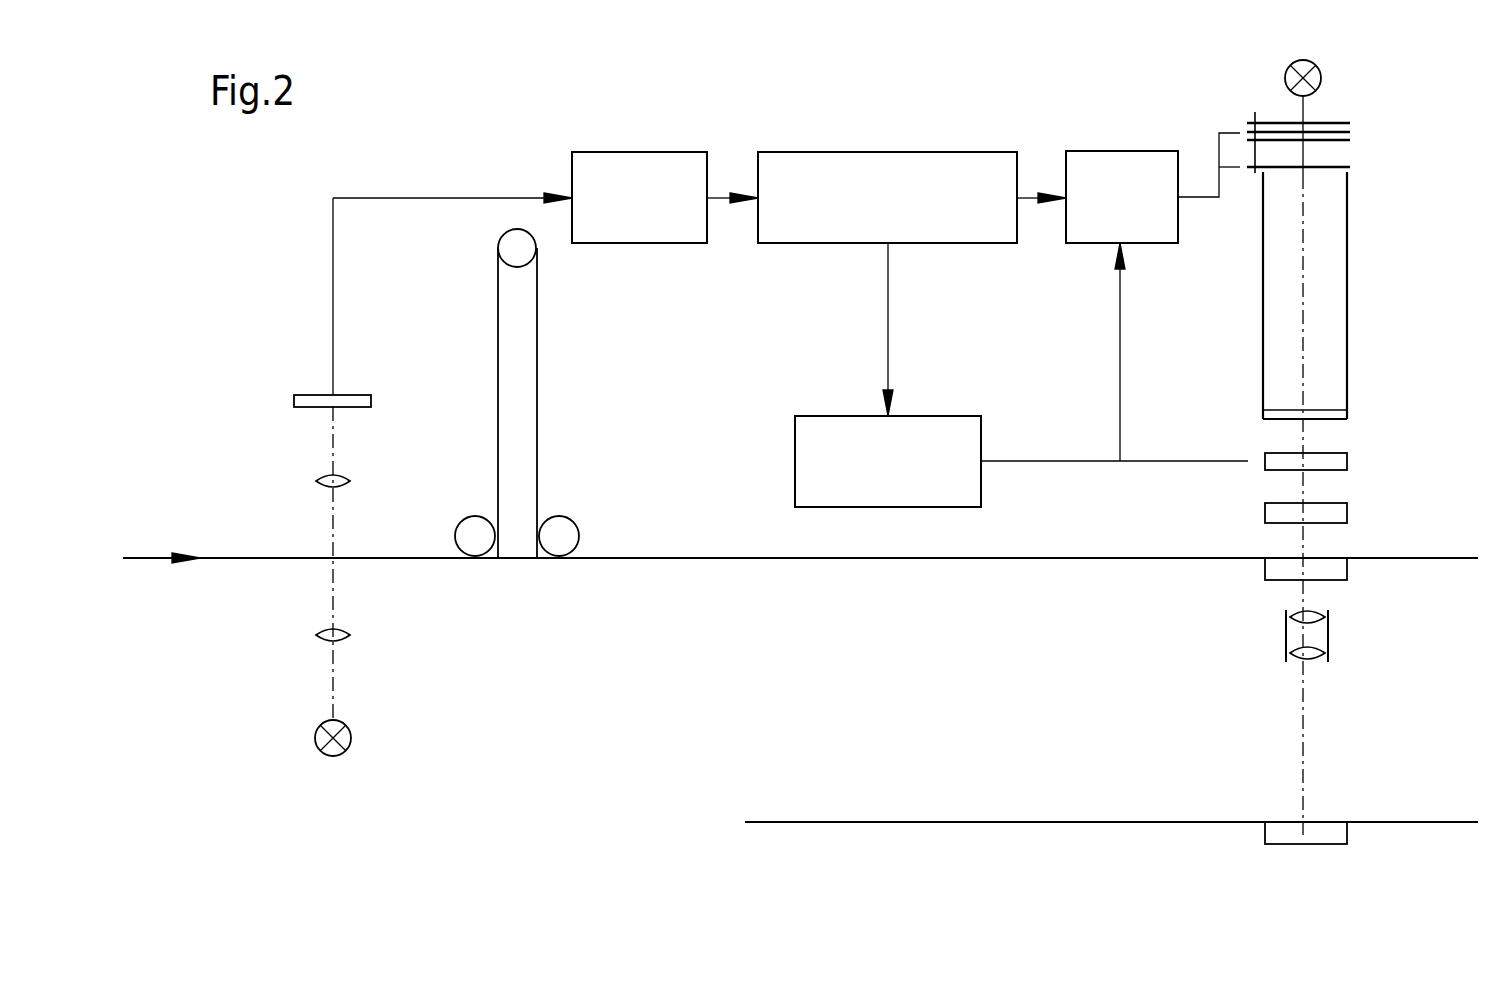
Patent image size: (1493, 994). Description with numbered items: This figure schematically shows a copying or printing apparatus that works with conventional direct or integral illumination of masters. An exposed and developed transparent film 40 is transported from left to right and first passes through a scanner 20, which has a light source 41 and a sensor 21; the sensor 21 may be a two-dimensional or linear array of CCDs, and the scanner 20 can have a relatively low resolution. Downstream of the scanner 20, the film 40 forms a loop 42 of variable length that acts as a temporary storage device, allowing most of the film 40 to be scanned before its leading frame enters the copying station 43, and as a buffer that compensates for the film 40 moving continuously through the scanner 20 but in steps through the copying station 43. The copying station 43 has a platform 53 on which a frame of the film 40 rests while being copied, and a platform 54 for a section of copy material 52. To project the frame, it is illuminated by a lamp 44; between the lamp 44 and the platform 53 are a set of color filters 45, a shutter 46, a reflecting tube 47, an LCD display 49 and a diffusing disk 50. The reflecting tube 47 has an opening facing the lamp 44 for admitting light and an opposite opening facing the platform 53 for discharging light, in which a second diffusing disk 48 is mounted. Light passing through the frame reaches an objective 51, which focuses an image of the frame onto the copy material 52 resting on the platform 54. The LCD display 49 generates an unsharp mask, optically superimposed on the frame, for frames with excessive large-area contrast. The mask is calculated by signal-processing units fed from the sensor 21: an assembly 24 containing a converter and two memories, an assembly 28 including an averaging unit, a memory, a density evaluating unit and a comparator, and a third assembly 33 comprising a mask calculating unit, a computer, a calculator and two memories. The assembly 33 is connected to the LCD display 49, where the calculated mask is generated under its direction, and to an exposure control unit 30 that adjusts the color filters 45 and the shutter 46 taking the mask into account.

The scanner 20 is at (268, 527).
The sensor 21 is at (293, 398).
The assembly 24 is at (632, 152).
The assembly 28 is at (912, 152).
The exposure control unit 30 is at (1113, 151).
The assembly 33 is at (795, 456).
The film 40 is at (250, 560).
The light source 41 is at (352, 735).
The loop 42 is at (578, 366).
The copying station 43 is at (1410, 318).
The lamp 44 is at (1323, 73).
The color filters 45 is at (1380, 133).
The shutter 46 is at (1350, 167).
The reflecting tube 47 is at (1263, 292).
The second diffusing disk 48 is at (1347, 425).
The LCD display 49 is at (1347, 460).
The diffusing disk 50 is at (1347, 512).
The objective 51 is at (1330, 635).
The copy material 52 is at (905, 822).
The platform 53 is at (1347, 570).
The platform 54 is at (1348, 836).